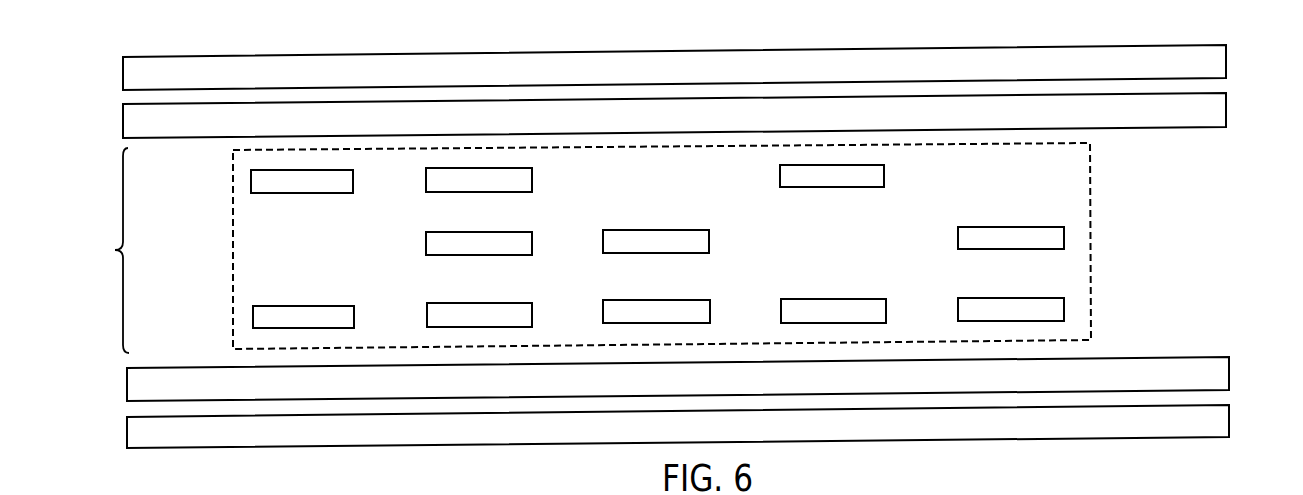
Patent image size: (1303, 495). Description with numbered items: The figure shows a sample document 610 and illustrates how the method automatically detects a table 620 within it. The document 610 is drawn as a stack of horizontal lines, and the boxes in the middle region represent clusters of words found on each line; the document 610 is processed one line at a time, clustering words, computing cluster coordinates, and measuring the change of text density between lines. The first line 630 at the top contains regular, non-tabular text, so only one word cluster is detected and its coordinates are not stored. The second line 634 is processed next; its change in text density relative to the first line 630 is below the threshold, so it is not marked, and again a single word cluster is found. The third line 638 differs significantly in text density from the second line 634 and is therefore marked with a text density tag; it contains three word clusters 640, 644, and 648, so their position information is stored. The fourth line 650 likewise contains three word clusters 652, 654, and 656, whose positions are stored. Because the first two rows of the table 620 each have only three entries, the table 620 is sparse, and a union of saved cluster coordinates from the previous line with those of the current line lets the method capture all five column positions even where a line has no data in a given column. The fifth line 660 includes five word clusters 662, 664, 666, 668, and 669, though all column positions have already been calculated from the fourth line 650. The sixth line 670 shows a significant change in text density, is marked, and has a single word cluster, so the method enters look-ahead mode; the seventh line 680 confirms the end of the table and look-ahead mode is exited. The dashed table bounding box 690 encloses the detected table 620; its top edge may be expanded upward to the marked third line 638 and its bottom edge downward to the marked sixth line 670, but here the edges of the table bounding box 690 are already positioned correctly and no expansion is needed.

The document 610 is at (111, 116).
The table 620 is at (103, 250).
The first line 630 is at (1220, 62).
The second line 634 is at (1220, 110).
The third line 638 is at (1198, 182).
The word cluster 640 is at (258, 182).
The word cluster 644 is at (527, 175).
The word cluster 648 is at (880, 178).
The fourth line 650 is at (1200, 249).
The word cluster 652 is at (434, 247).
The word cluster 654 is at (702, 244).
The word cluster 656 is at (1054, 235).
The fifth line 660 is at (1200, 318).
The word cluster 662 is at (320, 308).
The word cluster 664 is at (505, 308).
The word cluster 666 is at (681, 306).
The word cluster 668 is at (851, 304).
The word cluster 669 is at (1021, 303).
The sixth line 670 is at (1222, 377).
The seventh line 680 is at (1222, 421).
The table bounding box 690 is at (1091, 172).